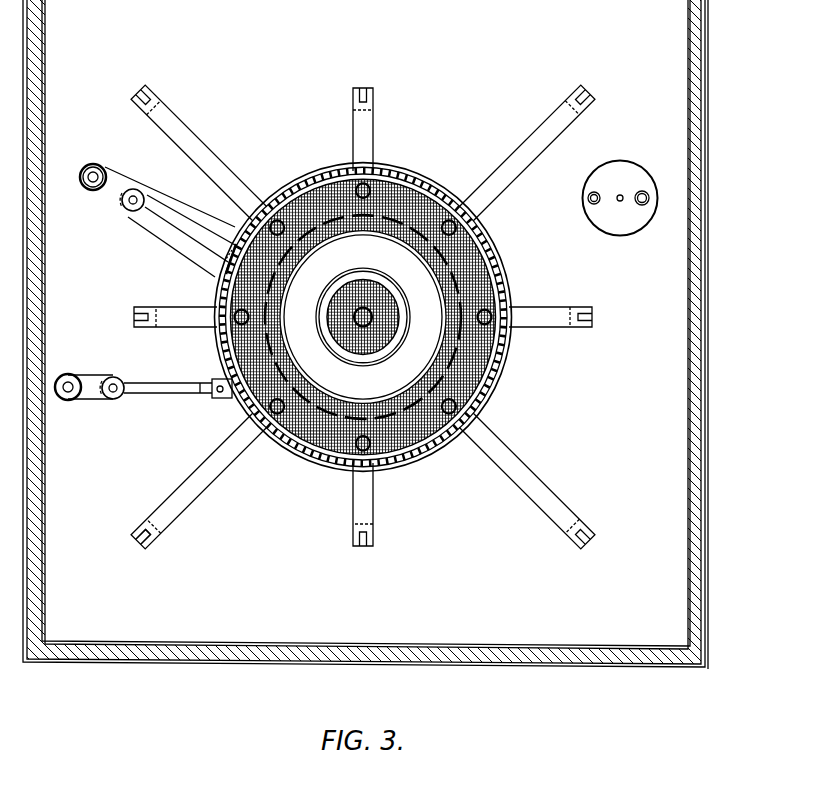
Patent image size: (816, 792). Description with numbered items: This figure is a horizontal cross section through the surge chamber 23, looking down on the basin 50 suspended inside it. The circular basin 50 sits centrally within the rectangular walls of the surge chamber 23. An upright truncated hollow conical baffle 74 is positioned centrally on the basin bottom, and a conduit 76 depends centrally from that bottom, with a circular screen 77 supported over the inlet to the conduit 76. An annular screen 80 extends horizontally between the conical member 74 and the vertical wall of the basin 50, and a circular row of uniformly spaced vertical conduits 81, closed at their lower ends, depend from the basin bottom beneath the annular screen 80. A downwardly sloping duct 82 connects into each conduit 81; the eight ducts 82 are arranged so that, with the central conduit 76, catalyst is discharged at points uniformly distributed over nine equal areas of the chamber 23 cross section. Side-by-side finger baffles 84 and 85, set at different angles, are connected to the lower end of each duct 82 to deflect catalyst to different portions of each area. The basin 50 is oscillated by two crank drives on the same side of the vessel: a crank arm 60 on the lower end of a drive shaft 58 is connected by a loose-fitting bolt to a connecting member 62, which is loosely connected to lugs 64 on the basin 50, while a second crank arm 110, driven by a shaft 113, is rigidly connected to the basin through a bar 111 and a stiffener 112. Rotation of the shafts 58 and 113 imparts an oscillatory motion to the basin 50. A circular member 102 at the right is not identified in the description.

The surge chamber 23 is at (707, 150).
The basin 50 is at (384, 317).
The drive shaft 58 is at (68, 373).
The crank arm 60 is at (78, 400).
The connecting member 62 is at (172, 395).
The lugs 64 is at (225, 400).
The truncated conical baffle 74 is at (414, 317).
The conduit 76 is at (374, 284).
The circular screen 77 is at (377, 317).
The annular screen 80 is at (387, 317).
The vertical conduits 81 is at (363, 304).
The sloping duct 82 is at (528, 132).
The finger baffle 84 is at (135, 540).
The finger baffle 85 is at (158, 530).
The disc 102 is at (650, 166).
The second crank arm 110 is at (95, 163).
The bar 111 is at (170, 215).
The stiffener 112 is at (212, 220).
The shaft 113 is at (88, 188).